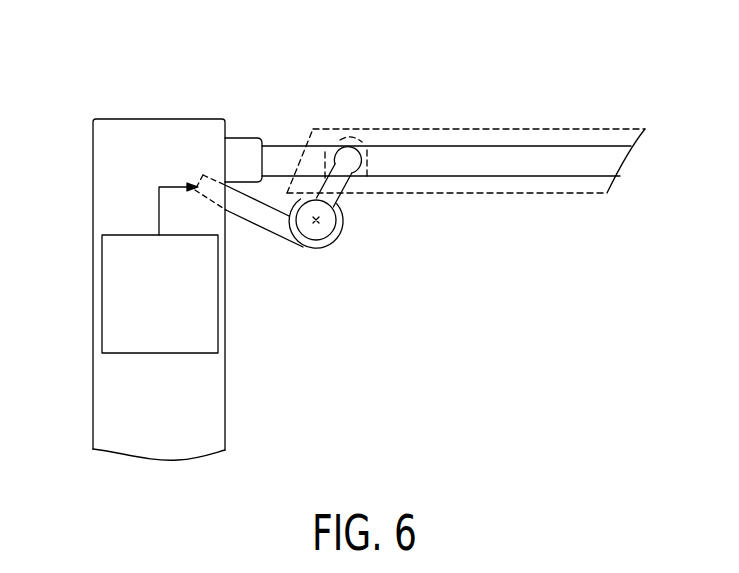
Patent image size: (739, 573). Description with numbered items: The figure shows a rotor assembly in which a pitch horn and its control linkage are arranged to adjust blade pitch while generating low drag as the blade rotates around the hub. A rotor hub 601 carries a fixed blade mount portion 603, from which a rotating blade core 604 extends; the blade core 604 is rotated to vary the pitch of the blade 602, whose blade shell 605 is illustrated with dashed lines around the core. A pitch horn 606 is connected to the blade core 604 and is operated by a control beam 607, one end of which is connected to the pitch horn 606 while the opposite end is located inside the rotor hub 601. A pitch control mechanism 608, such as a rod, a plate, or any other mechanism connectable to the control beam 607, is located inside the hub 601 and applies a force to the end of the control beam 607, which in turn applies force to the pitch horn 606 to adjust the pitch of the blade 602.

The rotor hub 601 is at (92, 174).
The blade 602 is at (340, 70).
The fixed blade mount portion 603 is at (250, 137).
The rotating blade core 604 is at (437, 146).
The blade shell 605 is at (570, 130).
The pitch horn 606 is at (338, 194).
The control beam 607 is at (270, 222).
The pitch control mechanism 608 is at (102, 292).